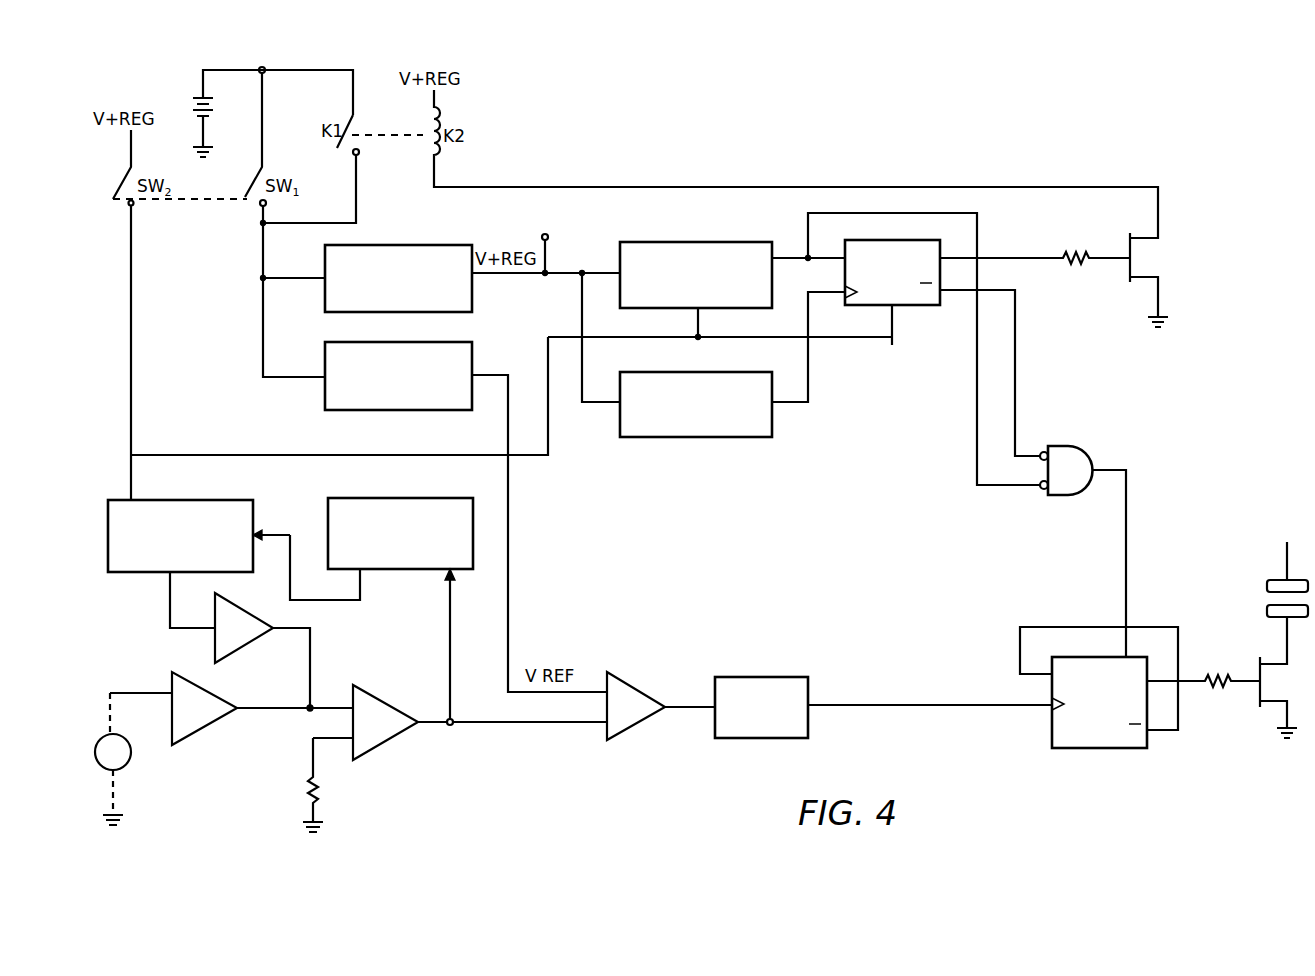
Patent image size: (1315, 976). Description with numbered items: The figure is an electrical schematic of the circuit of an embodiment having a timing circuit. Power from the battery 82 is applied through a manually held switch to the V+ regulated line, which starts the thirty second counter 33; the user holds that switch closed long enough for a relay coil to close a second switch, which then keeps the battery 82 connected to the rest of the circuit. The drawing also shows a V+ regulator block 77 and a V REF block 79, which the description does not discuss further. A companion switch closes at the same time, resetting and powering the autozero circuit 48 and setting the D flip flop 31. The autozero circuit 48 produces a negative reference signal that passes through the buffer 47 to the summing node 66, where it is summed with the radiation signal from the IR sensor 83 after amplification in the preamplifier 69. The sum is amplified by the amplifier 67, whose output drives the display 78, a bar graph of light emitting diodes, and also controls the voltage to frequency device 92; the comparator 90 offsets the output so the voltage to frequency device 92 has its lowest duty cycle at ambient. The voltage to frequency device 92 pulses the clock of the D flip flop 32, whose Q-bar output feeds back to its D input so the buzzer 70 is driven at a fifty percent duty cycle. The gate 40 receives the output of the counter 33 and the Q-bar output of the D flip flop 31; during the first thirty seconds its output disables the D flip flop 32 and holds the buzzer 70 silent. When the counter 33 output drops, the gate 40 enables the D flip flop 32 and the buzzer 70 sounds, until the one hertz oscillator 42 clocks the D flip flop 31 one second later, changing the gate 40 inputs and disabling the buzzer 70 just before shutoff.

The battery 82 is at (192, 102).
The voltage regulator 77 is at (428, 243).
The voltage reference 79 is at (472, 365).
The 30 second counter 33 is at (703, 240).
The 1 Hz oscillator 42 is at (723, 437).
The D flip flop 31 is at (915, 307).
The gate 40 is at (1080, 445).
The D flip flop 32 is at (1097, 750).
The buzzer 70 is at (1267, 592).
The autozero circuit 48 is at (253, 520).
The display 78 is at (427, 498).
The buffer 47 is at (260, 642).
The preamplifier 69 is at (208, 724).
The IR sensor 83 is at (113, 768).
The summing node 66 is at (315, 703).
The amplifier 67 is at (392, 742).
The comparator 90 is at (632, 720).
The voltage to frequency device 92 is at (778, 732).